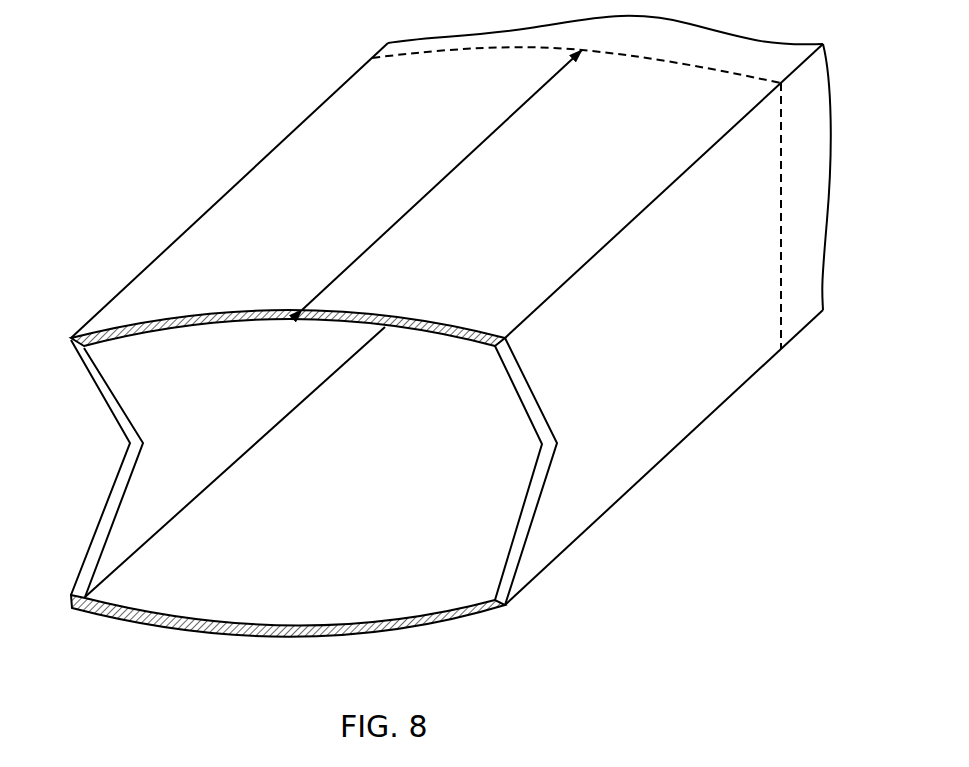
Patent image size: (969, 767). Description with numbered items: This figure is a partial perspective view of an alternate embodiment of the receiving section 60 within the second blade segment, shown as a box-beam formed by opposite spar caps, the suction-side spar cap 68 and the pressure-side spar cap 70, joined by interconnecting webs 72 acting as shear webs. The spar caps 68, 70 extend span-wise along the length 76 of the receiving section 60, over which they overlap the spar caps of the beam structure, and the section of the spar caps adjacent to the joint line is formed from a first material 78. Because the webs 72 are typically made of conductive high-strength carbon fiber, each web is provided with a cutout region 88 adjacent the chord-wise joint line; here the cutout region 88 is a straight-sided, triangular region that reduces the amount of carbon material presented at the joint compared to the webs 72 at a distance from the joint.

The receiving section 60 is at (178, 88).
The spar cap 68 is at (159, 603).
The spar cap 70 is at (324, 136).
The interconnecting webs 72 is at (683, 408).
The length 76 is at (521, 105).
The first material 78 is at (484, 212).
The cutout region 88 is at (103, 448).